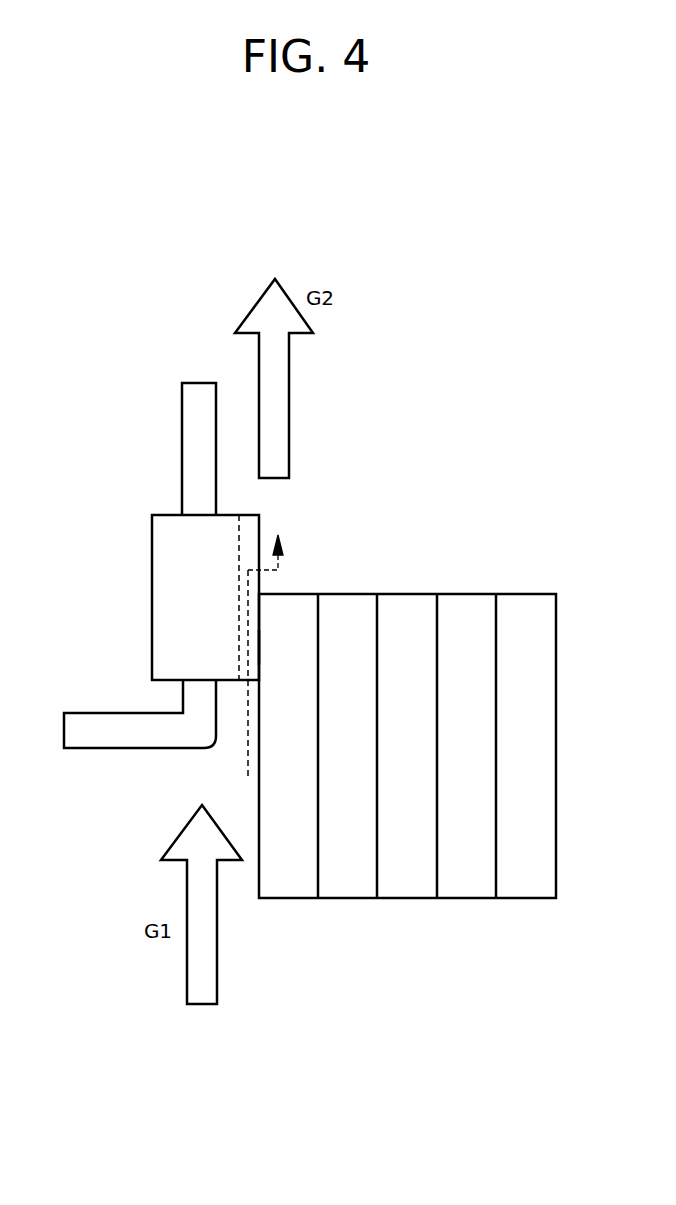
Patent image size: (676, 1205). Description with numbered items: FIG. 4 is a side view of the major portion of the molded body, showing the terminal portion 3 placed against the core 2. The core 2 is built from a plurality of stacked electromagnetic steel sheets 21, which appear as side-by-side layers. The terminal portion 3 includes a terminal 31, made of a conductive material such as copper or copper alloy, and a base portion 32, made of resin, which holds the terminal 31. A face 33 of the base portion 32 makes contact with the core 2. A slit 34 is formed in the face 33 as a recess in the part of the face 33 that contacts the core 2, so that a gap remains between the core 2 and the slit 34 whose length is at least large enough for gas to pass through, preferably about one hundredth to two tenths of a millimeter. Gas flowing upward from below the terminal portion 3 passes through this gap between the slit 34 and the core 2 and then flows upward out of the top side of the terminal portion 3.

The core 2 is at (313, 517).
The electromagnetic steel sheet 21 is at (303, 603).
The terminal portion 3 is at (62, 427).
The terminal 31 is at (193, 444).
The base portion 32 is at (150, 557).
The face 33 is at (260, 647).
The slit 34 is at (263, 530).